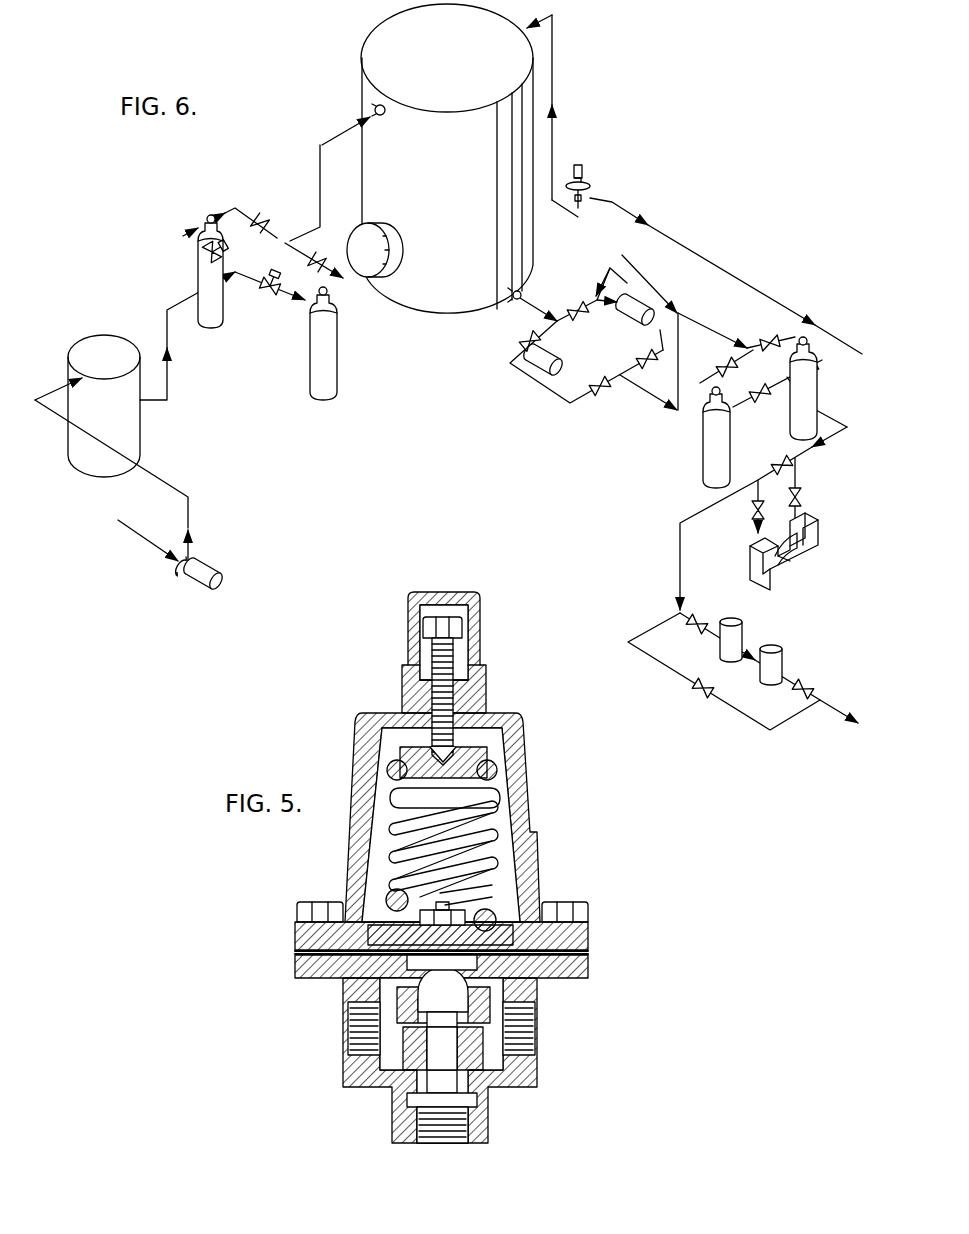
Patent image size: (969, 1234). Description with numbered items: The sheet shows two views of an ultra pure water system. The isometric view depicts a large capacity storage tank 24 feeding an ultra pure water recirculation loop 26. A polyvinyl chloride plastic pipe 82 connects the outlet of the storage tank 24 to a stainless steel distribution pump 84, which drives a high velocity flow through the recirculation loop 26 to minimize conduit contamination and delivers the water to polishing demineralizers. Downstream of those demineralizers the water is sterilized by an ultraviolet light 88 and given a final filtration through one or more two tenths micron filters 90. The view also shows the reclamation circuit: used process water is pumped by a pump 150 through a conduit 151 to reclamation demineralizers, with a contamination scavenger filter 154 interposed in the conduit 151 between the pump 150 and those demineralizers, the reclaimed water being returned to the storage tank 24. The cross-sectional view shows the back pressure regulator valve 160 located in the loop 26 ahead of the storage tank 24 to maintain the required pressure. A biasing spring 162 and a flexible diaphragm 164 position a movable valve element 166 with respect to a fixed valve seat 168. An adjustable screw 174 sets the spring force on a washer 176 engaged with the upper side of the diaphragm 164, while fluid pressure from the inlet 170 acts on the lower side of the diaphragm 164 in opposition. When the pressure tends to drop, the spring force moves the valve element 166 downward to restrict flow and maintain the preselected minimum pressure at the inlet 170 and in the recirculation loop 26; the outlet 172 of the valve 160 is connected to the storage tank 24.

In FIG. 6, the storage tank 24 is at (362, 70).
In FIG. 6, the ultra pure water recirculation loop 26 is at (655, 233).
In FIG. 6, the polyvinyl chloride plastic pipe 82 is at (521, 297).
In FIG. 6, the distribution pump 84 is at (547, 366).
In FIG. 6, the ultraviolet light 88 is at (780, 573).
In FIG. 6, the 0.2 micron filter 90 is at (776, 655).
In FIG. 6, the pump 150 is at (210, 565).
In FIG. 6, the conduit 151 is at (152, 473).
In FIG. 6, the contamination scavenger filter 154 is at (90, 341).
In FIG. 6, the back pressure regulator valve 160 is at (592, 175).
In FIG. 5, the back pressure regulator valve 160 is at (310, 846).
In FIG. 5, the biasing spring 162 is at (487, 813).
In FIG. 5, the flexible diaphragm 164 is at (548, 970).
In FIG. 5, the movable valve element 166 is at (450, 998).
In FIG. 5, the fixed valve seat 168 is at (397, 1007).
In FIG. 5, the inlet 170 is at (345, 1013).
In FIG. 5, the outlet 172 is at (425, 1147).
In FIG. 5, the adjustable screw 174 is at (455, 657).
In FIG. 5, the washer 176 is at (540, 898).